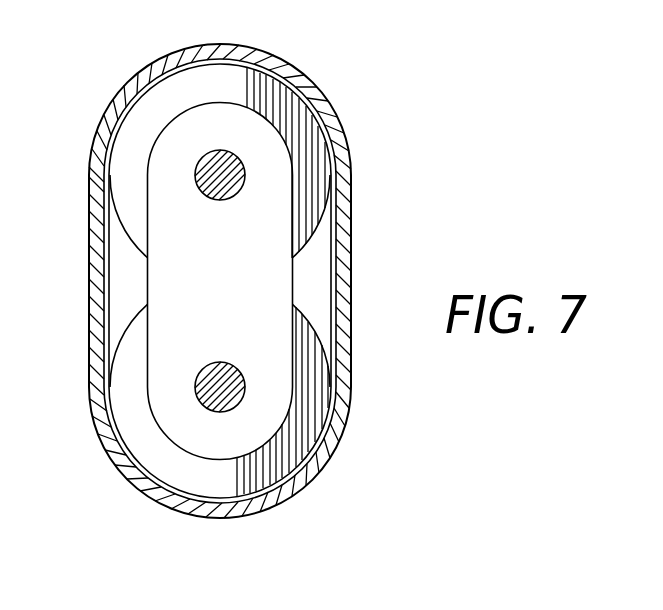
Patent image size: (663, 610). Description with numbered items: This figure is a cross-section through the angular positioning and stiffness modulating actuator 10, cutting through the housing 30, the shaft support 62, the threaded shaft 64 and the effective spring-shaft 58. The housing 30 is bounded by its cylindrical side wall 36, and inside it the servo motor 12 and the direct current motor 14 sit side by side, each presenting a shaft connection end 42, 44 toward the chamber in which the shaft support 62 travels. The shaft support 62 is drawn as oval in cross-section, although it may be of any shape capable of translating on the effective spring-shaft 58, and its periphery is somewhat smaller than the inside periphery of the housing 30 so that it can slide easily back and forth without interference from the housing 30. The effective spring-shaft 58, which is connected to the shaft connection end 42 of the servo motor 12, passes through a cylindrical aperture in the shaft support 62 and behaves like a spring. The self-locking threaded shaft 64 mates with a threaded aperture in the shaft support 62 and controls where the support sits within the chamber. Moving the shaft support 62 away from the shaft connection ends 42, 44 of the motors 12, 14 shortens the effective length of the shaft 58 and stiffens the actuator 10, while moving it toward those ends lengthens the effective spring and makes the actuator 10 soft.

The angular positioning and stiffness modulating actuator 10 is at (372, 91).
The servo motor 12 is at (297, 450).
The direct current motor 14 is at (233, 82).
The housing 30 is at (302, 81).
The cylindrical side wall 36 is at (345, 289).
The shaft connection end of the servo motor 42 is at (320, 394).
The shaft connection end of the DC motor 44 is at (313, 218).
The effective spring-shaft 58 is at (197, 380).
The shaft support 62 is at (270, 164).
The threaded shaft 64 is at (213, 199).